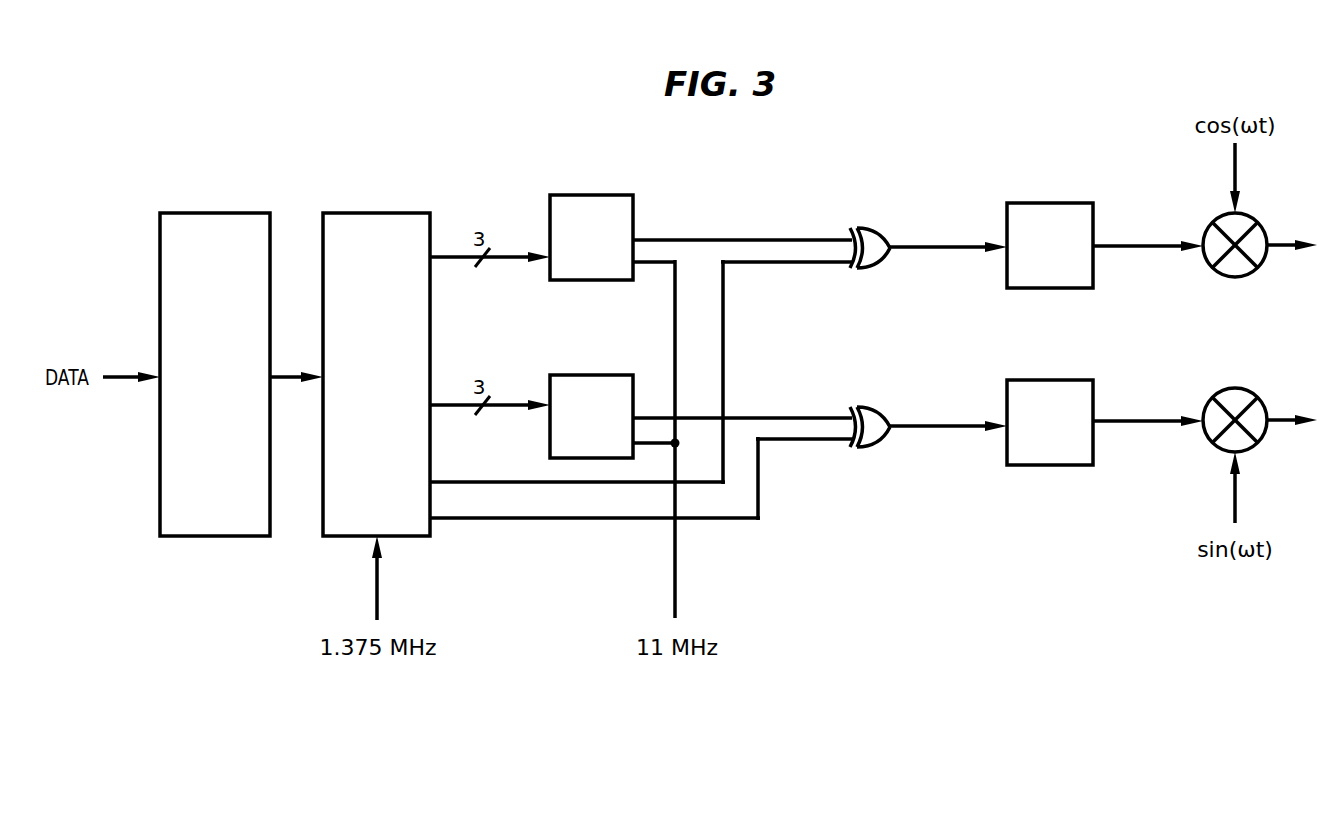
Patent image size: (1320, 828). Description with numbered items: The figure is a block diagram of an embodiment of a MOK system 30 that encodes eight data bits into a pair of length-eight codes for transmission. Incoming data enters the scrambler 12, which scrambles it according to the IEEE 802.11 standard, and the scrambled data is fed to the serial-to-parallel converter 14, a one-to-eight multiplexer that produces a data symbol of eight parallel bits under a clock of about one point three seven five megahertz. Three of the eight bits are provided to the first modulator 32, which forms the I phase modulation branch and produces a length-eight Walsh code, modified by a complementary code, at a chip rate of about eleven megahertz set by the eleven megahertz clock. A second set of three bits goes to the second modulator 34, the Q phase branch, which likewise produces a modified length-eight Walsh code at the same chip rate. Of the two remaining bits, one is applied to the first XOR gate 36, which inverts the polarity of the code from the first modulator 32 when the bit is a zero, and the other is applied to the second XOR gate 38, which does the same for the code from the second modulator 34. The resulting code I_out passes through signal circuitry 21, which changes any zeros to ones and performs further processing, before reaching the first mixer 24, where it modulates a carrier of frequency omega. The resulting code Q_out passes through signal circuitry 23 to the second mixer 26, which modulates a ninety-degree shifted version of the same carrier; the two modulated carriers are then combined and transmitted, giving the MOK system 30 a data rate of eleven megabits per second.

The MOK system 30 is at (932, 126).
The scrambler 12 is at (213, 213).
The serial-to-parallel converter 14 is at (372, 213).
The first modulator 32 is at (592, 195).
The second modulator 34 is at (592, 375).
The first XOR gate 36 is at (864, 228).
The second XOR gate 38 is at (864, 407).
The signal circuitry 21 is at (1050, 203).
The signal circuitry 23 is at (1050, 380).
The first mixer 24 is at (1259, 224).
The second mixer 26 is at (1259, 399).